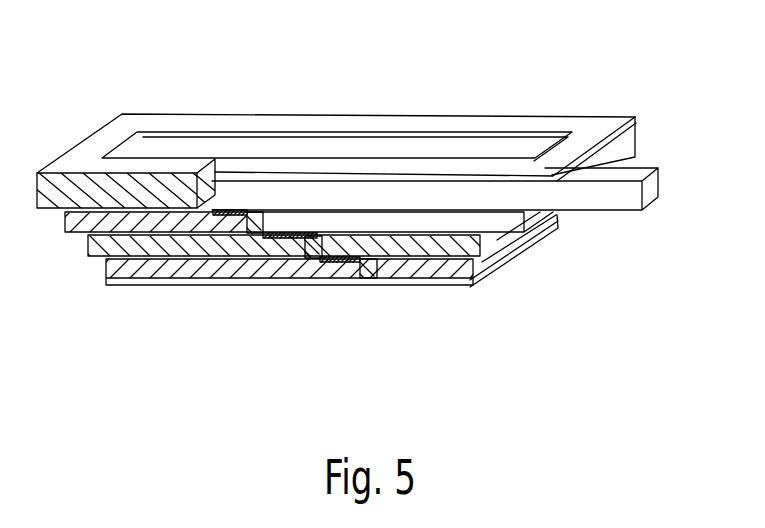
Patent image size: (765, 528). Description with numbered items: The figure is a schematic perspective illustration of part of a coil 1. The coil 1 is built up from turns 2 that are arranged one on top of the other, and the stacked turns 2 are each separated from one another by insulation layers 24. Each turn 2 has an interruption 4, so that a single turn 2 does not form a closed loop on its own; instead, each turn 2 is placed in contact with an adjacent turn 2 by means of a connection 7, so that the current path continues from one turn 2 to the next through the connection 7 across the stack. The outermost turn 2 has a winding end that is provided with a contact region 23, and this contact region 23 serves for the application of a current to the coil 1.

The coil 1 is at (545, 113).
The turns 2 is at (535, 241).
The interruption 4 is at (313, 235).
The connection 7 is at (232, 215).
The contact region 23 is at (652, 189).
The insulation layers 24 is at (439, 281).